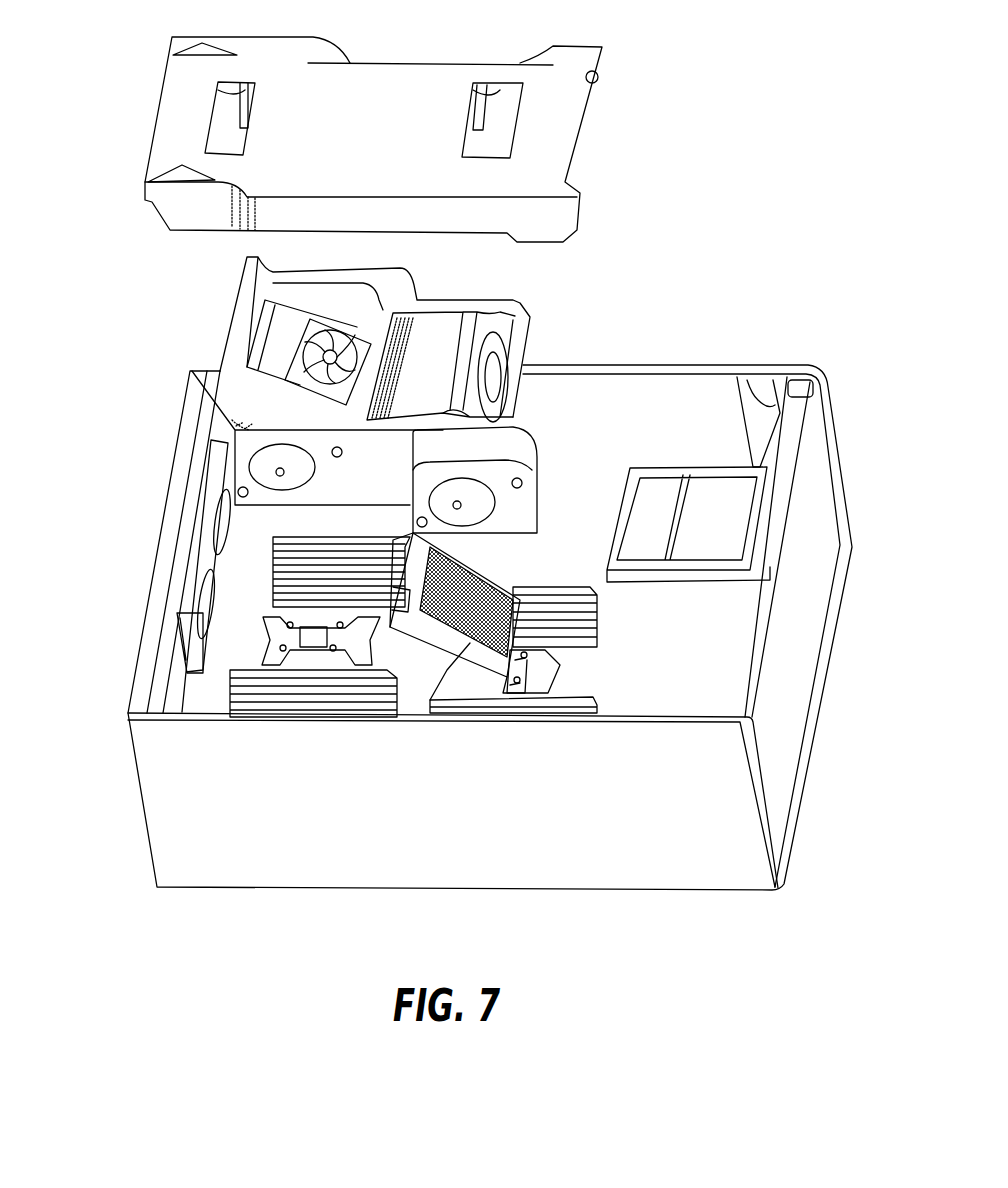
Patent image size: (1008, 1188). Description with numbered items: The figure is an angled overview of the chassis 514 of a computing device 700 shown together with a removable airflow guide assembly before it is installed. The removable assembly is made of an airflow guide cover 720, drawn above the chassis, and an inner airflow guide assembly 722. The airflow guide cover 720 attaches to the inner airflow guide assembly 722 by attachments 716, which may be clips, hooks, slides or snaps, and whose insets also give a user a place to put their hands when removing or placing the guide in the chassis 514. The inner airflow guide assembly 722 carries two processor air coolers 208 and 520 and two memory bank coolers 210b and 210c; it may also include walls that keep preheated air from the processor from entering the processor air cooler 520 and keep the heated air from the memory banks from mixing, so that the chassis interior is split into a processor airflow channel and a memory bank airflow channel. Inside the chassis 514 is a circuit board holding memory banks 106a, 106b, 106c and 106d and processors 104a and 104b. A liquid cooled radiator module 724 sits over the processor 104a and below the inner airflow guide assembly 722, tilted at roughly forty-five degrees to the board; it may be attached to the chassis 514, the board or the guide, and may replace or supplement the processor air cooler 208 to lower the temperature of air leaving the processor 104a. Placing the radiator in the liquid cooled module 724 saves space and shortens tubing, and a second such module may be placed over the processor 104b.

The computing device 700 is at (758, 356).
The attachments 716 is at (250, 110).
The airflow guide cover 720 is at (383, 97).
The processor air cooler 520 is at (320, 350).
The processor air cooler 208 is at (503, 377).
The chassis 514 is at (773, 380).
The inner airflow guide assembly 722 is at (313, 443).
The memory bank cooler 210c is at (260, 472).
The memory bank cooler 210b is at (477, 505).
The memory bank 106d is at (277, 557).
The memory bank 106c is at (227, 697).
The memory bank 106a is at (590, 597).
The memory bank 106b is at (537, 713).
The processor 104b is at (287, 637).
The processor 104a is at (557, 653).
The liquid cooled radiator module 724 is at (472, 640).